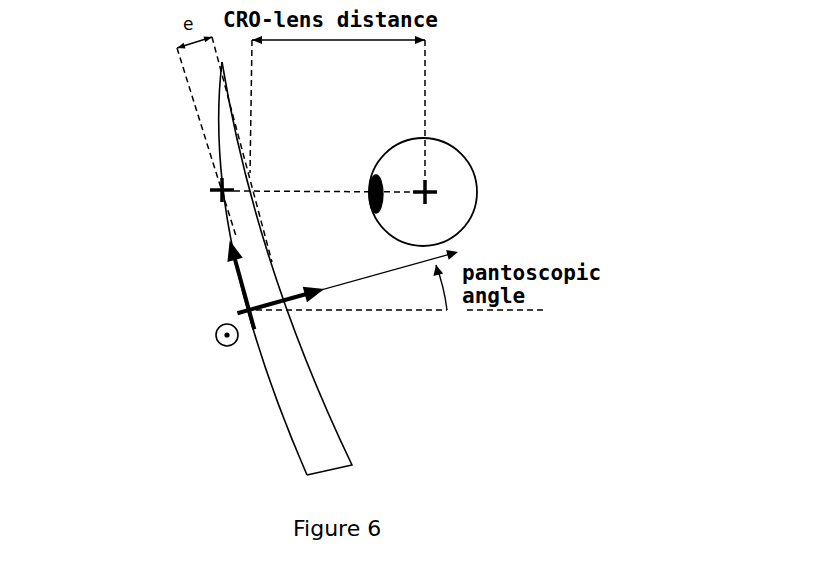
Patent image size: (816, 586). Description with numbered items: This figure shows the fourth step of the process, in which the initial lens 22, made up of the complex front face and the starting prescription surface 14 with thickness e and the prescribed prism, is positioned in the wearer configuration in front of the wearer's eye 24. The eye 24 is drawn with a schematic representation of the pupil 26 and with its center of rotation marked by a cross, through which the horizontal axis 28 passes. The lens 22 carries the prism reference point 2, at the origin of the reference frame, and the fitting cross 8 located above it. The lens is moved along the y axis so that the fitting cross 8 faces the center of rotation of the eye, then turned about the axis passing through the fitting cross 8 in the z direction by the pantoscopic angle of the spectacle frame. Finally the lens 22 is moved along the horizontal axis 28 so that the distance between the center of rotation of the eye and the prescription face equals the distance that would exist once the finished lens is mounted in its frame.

The prism reference point 2 is at (210, 310).
The fitting cross 8 is at (200, 190).
The starting prescription surface 14 is at (352, 447).
The initial lens 22 is at (283, 406).
The wearer's eye 24 is at (472, 166).
The pupil 26 is at (395, 210).
The horizontal axis 28 is at (327, 177).